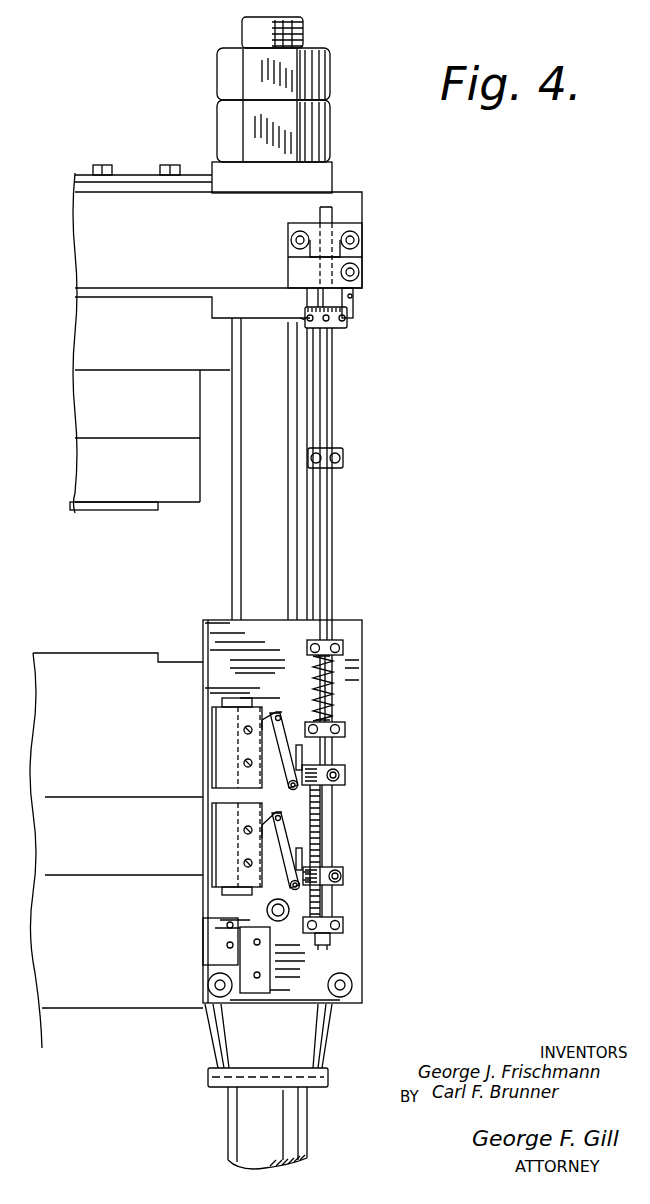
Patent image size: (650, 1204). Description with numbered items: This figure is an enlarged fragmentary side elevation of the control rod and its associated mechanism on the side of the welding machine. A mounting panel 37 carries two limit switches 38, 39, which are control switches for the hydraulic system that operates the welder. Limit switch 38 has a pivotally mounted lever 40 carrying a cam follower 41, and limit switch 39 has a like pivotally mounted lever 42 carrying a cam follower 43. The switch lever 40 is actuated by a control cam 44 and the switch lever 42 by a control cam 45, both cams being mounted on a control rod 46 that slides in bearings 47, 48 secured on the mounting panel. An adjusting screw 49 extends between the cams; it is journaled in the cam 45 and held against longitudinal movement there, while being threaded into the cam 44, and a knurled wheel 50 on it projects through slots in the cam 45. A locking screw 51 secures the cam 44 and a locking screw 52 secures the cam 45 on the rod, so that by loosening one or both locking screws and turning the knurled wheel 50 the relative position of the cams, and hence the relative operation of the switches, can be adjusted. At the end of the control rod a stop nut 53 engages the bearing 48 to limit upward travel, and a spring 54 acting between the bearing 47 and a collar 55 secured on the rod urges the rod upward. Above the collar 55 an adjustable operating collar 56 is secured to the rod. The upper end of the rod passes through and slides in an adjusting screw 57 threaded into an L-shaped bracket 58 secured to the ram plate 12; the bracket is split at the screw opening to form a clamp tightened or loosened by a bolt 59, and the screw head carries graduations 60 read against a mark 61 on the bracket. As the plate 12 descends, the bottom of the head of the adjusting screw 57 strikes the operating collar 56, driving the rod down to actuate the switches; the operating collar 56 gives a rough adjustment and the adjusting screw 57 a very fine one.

The ram plate 12 is at (363, 205).
The mounting panel 37 is at (363, 694).
The limit switch 38 is at (217, 748).
The limit switch 39 is at (217, 838).
The lever 40 is at (292, 745).
The cam follower 41 is at (293, 790).
The lever 42 is at (282, 885).
The cam follower 43 is at (272, 945).
The control cam 44 is at (300, 745).
The control cam 45 is at (298, 860).
The control rod 46 is at (330, 535).
The bearing 47 is at (345, 730).
The bearing 48 is at (343, 935).
The adjusting screw 49 is at (340, 802).
The knurled wheel 50 is at (343, 905).
The locking screw 51 is at (345, 770).
The locking screw 52 is at (345, 869).
The stop nut 53 is at (348, 940).
The spring 54 is at (345, 672).
The collar 55 is at (337, 645).
The operating collar 56 is at (343, 458).
The adjusting screw 57 is at (350, 318).
The L-shaped bracket 58 is at (363, 260).
The bolt 59 is at (355, 274).
The graduations 60 is at (305, 318).
The mark 61 is at (355, 298).